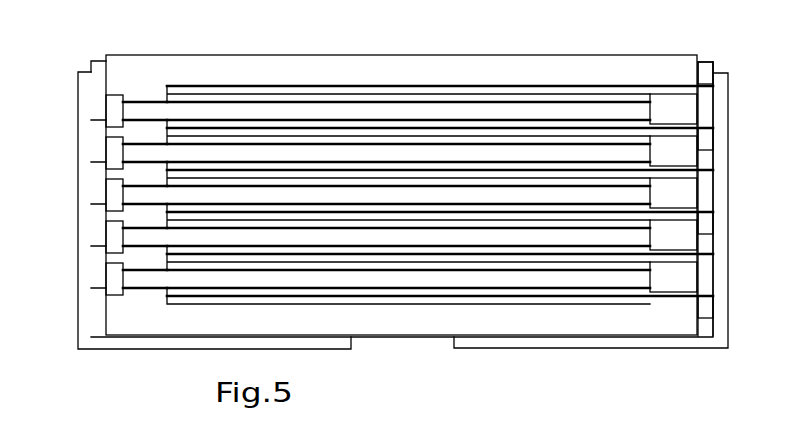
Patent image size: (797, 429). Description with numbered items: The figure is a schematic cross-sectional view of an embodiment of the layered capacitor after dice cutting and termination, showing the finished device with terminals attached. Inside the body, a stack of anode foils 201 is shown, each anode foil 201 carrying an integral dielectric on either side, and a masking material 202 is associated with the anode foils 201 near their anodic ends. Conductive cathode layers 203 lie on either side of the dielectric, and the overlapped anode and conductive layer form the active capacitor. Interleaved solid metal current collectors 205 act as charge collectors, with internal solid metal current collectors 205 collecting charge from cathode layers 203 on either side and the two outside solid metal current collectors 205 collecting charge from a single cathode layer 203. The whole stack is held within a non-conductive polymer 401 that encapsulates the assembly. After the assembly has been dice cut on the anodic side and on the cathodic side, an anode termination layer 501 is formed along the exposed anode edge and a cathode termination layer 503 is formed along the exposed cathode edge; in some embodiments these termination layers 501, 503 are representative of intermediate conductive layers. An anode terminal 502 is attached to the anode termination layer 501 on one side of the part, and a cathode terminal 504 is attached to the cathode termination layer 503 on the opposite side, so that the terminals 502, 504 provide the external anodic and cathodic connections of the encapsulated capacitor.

The non-conductive polymer 401 is at (530, 64).
The anode terminal 502 is at (152, 345).
The cathode terminal 504 is at (717, 346).
The masking material 202 is at (112, 105).
The anode termination layer 501 is at (100, 117).
The anode foil 201 is at (145, 150).
The conductive cathode layers 203 is at (212, 268).
The solid metal current collector 205 is at (688, 130).
The cathode termination layer 503 is at (707, 90).